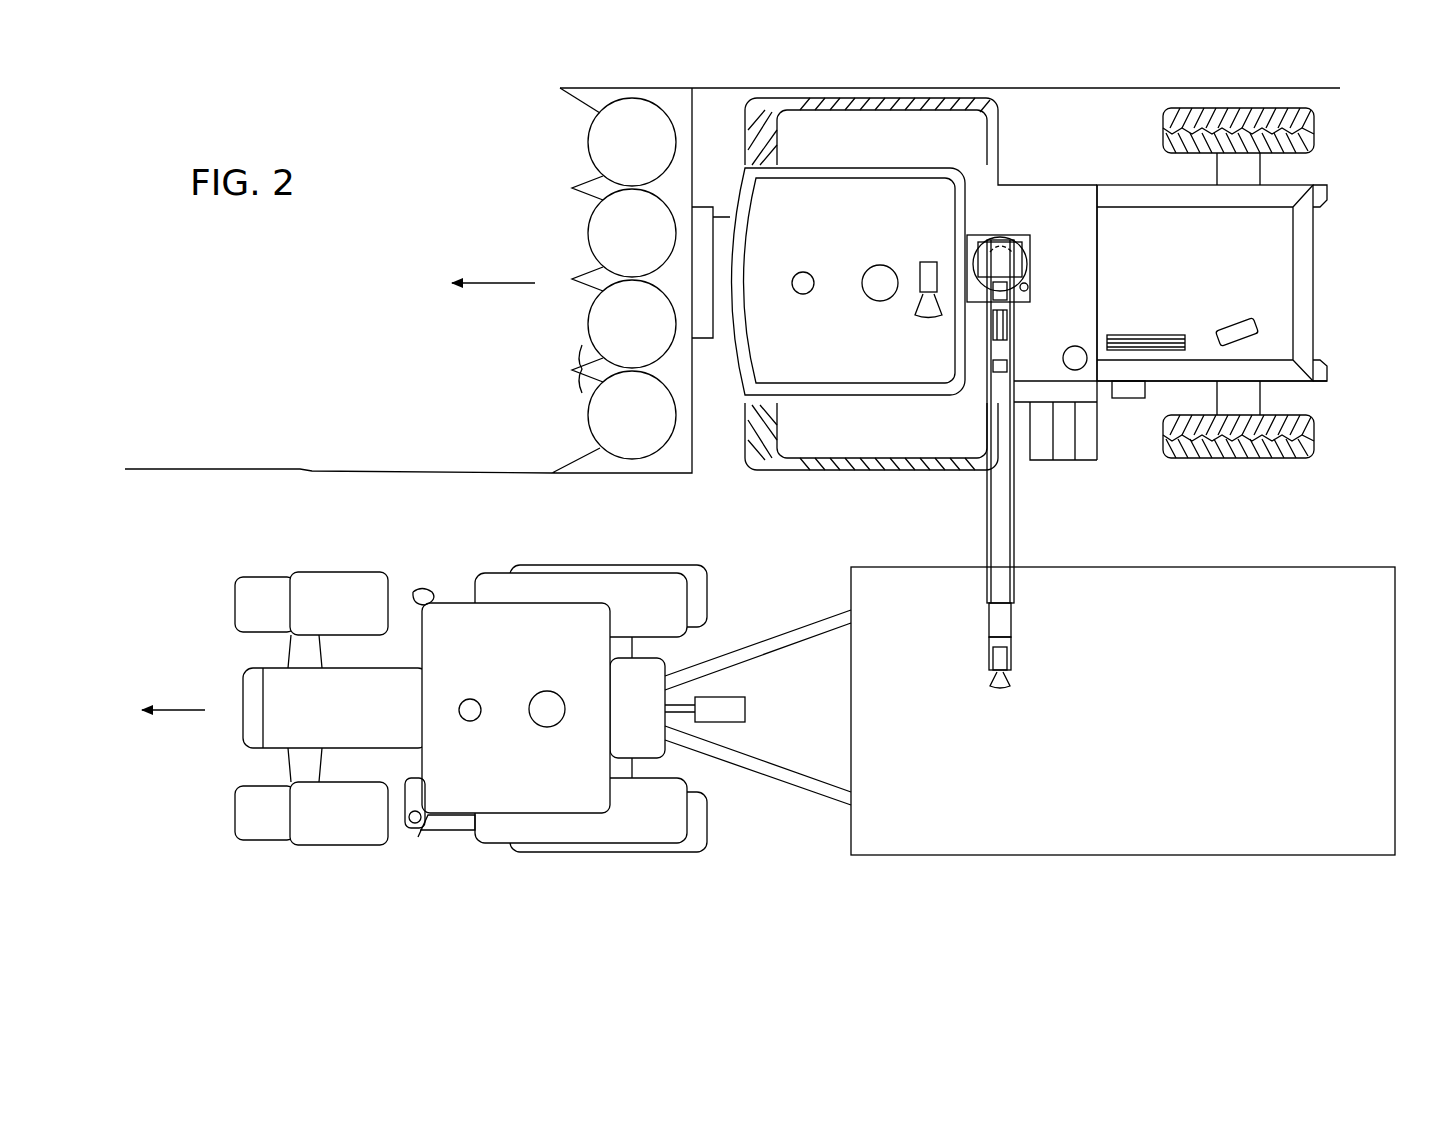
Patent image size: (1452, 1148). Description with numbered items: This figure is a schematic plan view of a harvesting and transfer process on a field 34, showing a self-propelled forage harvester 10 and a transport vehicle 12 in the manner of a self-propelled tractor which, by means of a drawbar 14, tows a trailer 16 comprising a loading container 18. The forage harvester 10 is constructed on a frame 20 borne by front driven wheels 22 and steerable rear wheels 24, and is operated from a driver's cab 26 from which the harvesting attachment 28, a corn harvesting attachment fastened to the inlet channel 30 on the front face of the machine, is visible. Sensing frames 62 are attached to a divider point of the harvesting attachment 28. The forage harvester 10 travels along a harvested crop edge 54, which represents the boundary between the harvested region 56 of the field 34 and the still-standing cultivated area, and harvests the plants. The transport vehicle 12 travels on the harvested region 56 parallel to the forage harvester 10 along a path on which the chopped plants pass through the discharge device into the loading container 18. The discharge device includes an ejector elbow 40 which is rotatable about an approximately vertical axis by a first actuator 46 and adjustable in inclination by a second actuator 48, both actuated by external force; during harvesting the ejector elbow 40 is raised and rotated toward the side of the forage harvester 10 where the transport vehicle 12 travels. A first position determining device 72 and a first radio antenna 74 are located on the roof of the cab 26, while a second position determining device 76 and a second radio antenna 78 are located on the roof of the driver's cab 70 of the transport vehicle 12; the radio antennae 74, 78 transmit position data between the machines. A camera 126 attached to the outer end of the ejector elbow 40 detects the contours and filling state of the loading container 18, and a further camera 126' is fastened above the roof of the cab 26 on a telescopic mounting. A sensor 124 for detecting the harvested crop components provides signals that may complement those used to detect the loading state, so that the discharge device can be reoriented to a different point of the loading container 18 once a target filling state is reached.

The self-propelled forage harvester 10 is at (1352, 277).
The transport vehicle 12 is at (376, 872).
The drawbar 14 is at (762, 780).
The trailer 16 is at (1330, 835).
The loading container 18 is at (1175, 733).
The frame 20 is at (1062, 197).
The front driven wheels 22 is at (768, 462).
The steerable rear wheels 24 is at (1310, 144).
The driver's cab 26 is at (855, 240).
The harvesting attachment 28 is at (673, 98).
The inlet channel 30 is at (690, 838).
The field 34 is at (292, 314).
The ejector elbow 40 is at (1001, 524).
The first actuator 46 is at (1030, 287).
The second actuator 48 is at (1003, 348).
The harvested crop edge 54 is at (320, 468).
The harvested region 56 is at (172, 580).
The sensing frames 62 is at (508, 376).
The driver's cab 70 is at (536, 774).
The first position determining device 72 is at (872, 290).
The first radio antenna 74 is at (803, 290).
The second position determining device 76 is at (548, 705).
The second radio antenna 78 is at (470, 704).
The sensor for detecting the harvested crop components 124 is at (1127, 392).
The camera 126 is at (1049, 659).
The camera 126' is at (918, 256).